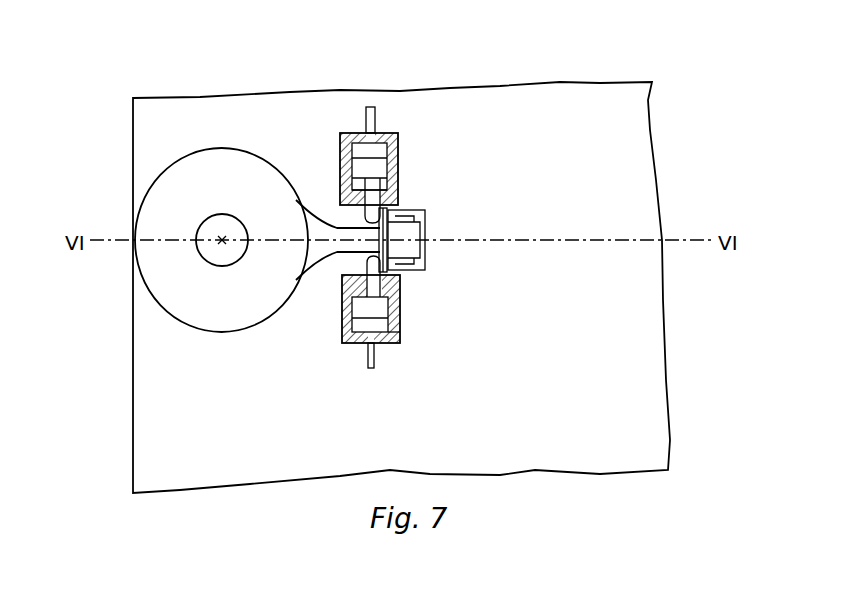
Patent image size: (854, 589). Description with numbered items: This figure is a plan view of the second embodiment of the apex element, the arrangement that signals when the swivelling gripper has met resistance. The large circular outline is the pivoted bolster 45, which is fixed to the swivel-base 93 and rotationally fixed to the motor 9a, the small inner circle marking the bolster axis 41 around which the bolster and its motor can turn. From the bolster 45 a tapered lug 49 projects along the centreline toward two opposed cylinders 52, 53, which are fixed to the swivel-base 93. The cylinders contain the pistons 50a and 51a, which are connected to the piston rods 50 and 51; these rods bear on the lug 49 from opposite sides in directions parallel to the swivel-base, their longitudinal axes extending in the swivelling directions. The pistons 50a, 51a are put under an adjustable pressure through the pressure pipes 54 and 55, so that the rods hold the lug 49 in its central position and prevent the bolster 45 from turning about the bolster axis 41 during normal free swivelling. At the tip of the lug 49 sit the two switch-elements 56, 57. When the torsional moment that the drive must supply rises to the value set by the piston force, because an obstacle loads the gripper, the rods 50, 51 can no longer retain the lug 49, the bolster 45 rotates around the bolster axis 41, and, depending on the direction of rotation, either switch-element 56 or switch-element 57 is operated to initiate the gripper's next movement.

The motor 9a is at (212, 247).
The bolster axis 41 is at (222, 243).
The pivoted bolster 45 is at (188, 188).
The lug 49 is at (353, 233).
The piston rod 50 is at (342, 283).
The piston 50a is at (377, 310).
The piston rod 51 is at (397, 163).
The piston 51a is at (388, 162).
The cylinder 52 is at (402, 318).
The cylinder 53 is at (357, 207).
The pressure pipe 54 is at (367, 362).
The pressure pipe 55 is at (377, 110).
The switch-element 56 is at (413, 222).
The switch-element 57 is at (428, 273).
The swivel-base 93 is at (662, 303).